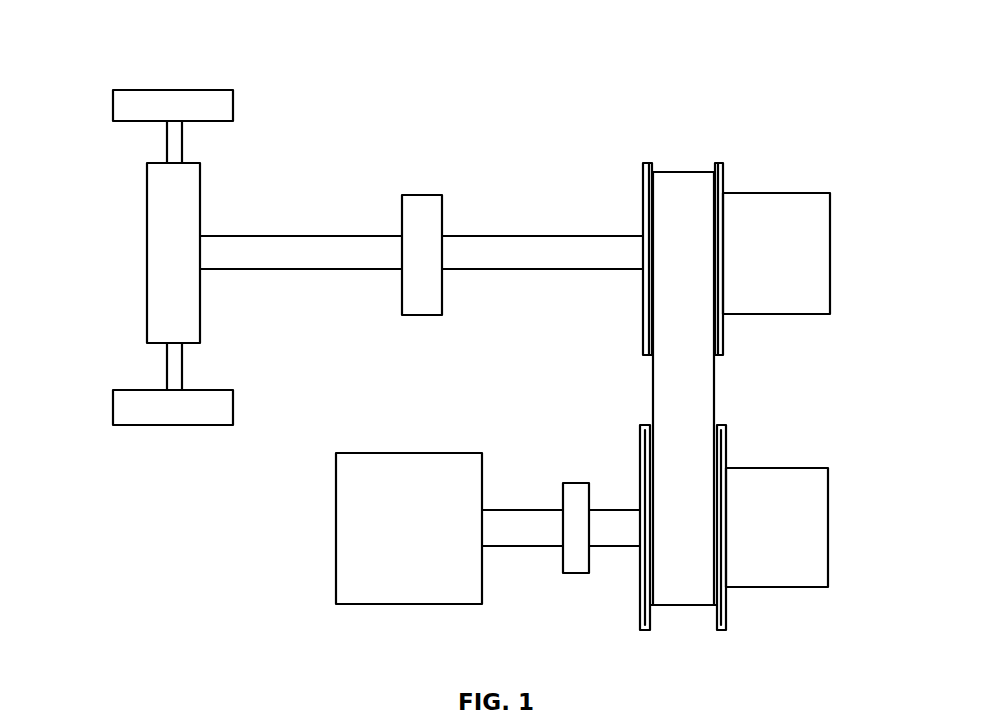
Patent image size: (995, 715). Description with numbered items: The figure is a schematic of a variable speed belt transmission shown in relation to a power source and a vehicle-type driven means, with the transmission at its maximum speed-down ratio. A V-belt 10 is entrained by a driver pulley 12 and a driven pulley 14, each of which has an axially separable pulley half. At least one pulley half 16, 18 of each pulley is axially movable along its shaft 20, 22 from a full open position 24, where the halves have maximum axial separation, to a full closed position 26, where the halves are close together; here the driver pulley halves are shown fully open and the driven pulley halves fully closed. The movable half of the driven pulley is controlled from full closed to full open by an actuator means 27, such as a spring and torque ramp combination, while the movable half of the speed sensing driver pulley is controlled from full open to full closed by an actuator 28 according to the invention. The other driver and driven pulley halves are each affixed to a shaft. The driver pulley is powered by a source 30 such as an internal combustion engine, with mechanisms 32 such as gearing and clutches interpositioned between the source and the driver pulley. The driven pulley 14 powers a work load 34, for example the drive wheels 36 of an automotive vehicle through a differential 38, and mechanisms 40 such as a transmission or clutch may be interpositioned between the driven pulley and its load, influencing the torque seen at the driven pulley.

The V-belt 10 is at (677, 182).
The driver pulley 12 is at (820, 617).
The driven pulley 14 is at (791, 142).
The pulley half 16 is at (723, 163).
The pulley half 18 is at (722, 426).
The shaft 20 is at (618, 548).
The shaft 22 is at (528, 244).
The full open position 24 is at (686, 629).
The full closed position 26 is at (680, 115).
The actuator means 27 is at (828, 538).
The actuator 28 is at (830, 227).
The power source 30 is at (398, 458).
The mechanisms 32 is at (575, 483).
The work load 34 is at (115, 334).
The drive wheels 36 is at (210, 91).
The differential 38 is at (147, 192).
The mechanisms 40 is at (424, 203).